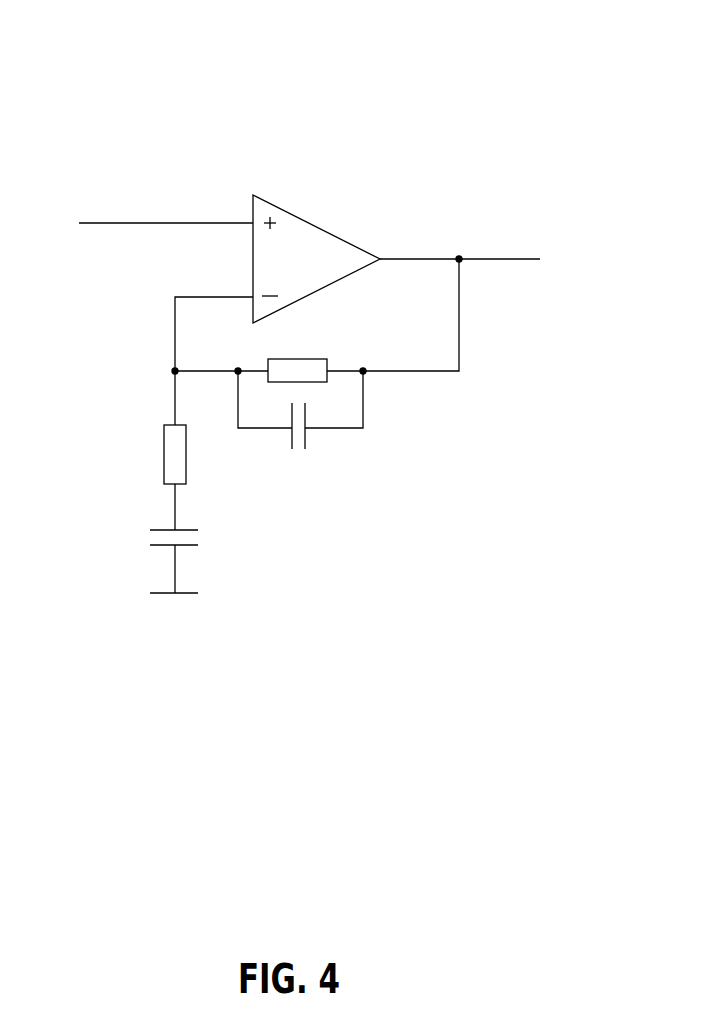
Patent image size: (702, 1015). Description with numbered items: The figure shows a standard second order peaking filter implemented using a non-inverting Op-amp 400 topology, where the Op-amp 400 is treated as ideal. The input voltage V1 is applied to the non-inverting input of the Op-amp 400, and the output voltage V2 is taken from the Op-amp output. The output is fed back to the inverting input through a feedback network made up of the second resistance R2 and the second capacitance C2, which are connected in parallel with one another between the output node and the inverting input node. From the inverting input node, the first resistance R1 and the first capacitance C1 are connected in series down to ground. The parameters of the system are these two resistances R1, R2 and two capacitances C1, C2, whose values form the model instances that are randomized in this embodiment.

The Op-amp 400 is at (101, 63).
The input voltage V1 is at (151, 224).
The output voltage V2 is at (474, 261).
The first resistance R1 is at (192, 427).
The second resistance R2 is at (297, 357).
The first capacitance C1 is at (191, 538).
The second capacitance C2 is at (300, 430).